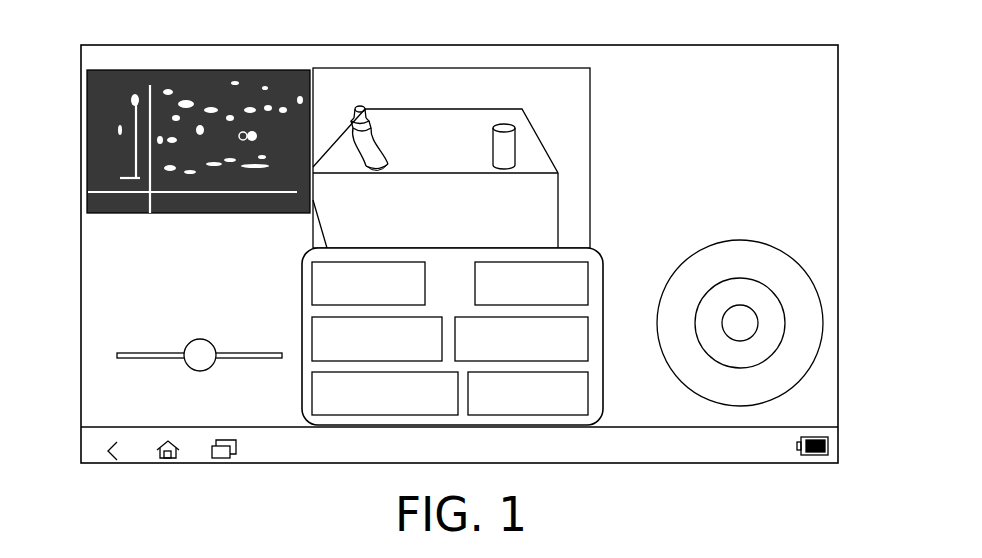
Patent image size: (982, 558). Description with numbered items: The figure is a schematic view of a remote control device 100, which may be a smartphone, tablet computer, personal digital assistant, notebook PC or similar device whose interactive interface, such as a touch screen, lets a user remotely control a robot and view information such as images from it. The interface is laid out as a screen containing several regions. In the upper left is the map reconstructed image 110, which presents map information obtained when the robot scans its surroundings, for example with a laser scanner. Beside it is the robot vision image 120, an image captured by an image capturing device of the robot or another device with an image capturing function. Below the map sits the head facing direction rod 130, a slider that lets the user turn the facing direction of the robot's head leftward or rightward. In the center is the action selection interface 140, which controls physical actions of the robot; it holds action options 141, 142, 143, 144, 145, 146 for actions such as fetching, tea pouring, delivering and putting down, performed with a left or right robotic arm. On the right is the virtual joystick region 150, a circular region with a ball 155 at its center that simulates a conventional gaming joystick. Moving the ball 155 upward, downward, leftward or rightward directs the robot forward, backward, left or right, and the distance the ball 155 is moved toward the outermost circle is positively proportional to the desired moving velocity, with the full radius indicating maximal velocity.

The remote control device 100 is at (778, 447).
The map reconstructed image 110 is at (131, 70).
The robot vision image 120 is at (420, 75).
The head facing direction rod 130 is at (128, 352).
The action selection interface 140 is at (452, 389).
The action option 141 is at (588, 283).
The action option 142 is at (588, 329).
The action option 143 is at (559, 392).
The action option 144 is at (312, 283).
The action option 145 is at (312, 329).
The action option 146 is at (312, 394).
The virtual joystick region 150 is at (772, 323).
The ball 155 is at (743, 317).